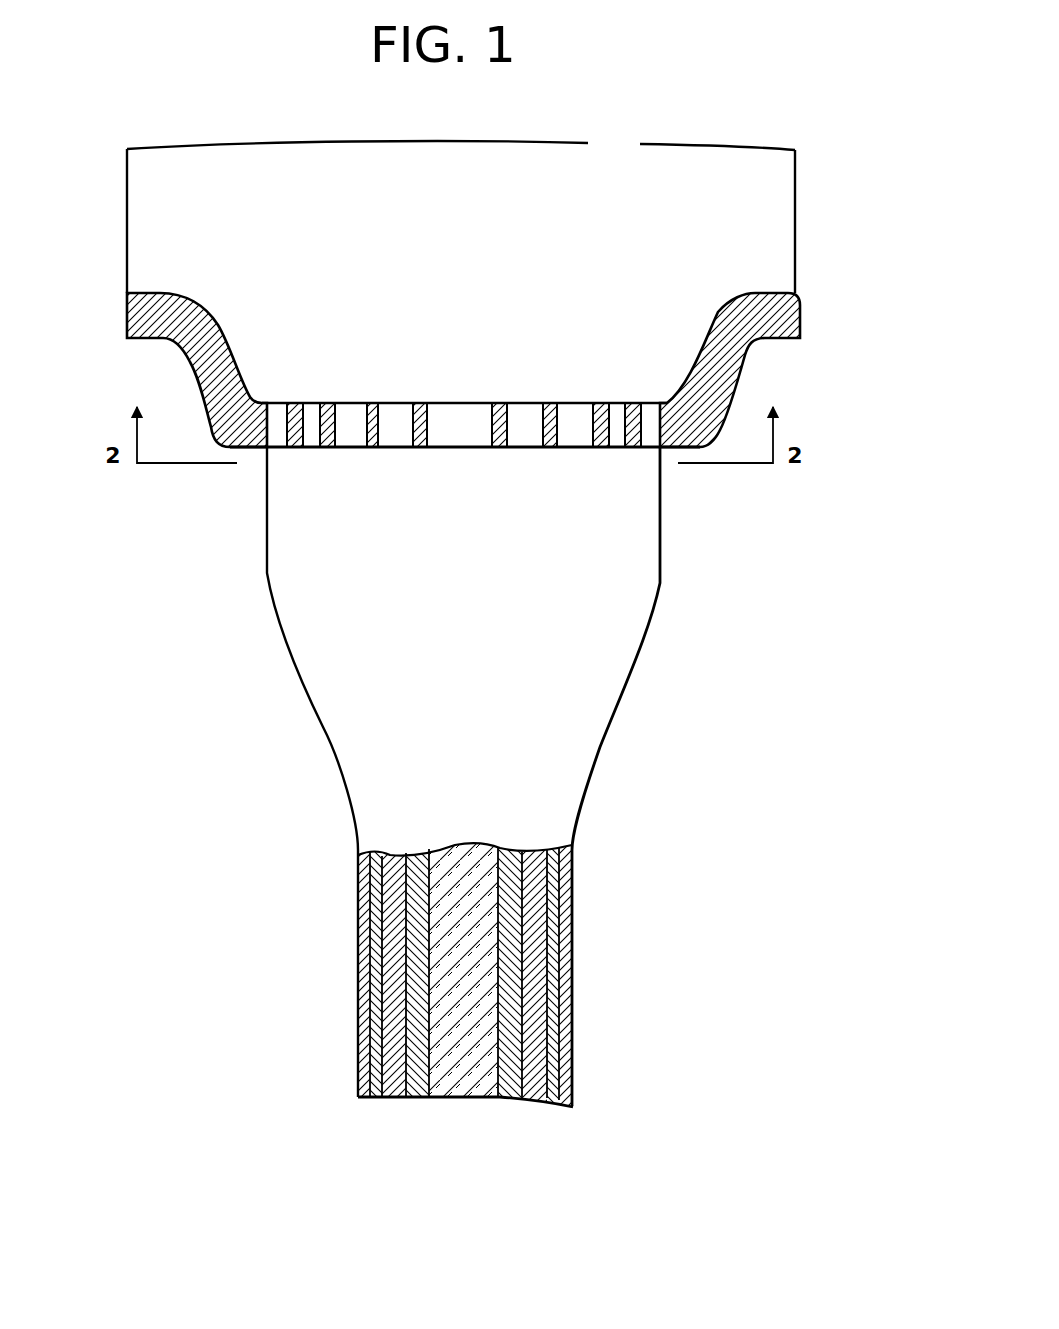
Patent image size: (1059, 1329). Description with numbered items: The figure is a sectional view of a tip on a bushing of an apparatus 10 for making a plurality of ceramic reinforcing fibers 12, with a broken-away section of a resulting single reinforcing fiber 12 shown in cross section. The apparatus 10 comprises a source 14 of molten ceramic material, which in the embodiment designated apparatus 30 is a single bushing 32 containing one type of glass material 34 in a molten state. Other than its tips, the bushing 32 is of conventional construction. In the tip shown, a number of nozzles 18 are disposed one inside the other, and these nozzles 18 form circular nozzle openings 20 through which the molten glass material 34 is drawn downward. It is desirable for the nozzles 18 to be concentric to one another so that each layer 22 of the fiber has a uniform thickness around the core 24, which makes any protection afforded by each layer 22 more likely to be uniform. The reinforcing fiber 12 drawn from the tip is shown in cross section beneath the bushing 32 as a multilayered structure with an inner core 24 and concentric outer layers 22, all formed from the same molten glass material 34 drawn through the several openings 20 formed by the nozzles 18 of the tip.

The apparatus 10 is at (665, 113).
The ceramic reinforcing fiber 12 is at (326, 796).
The source of molten ceramic material 14 is at (156, 350).
The nozzles 18 is at (256, 400).
The nozzle openings 20 is at (312, 449).
The layer 22 is at (377, 1102).
The core 24 is at (468, 1100).
The apparatus embodiment 30 is at (802, 166).
The bushing 32 is at (718, 312).
The glass material 34 is at (477, 199).